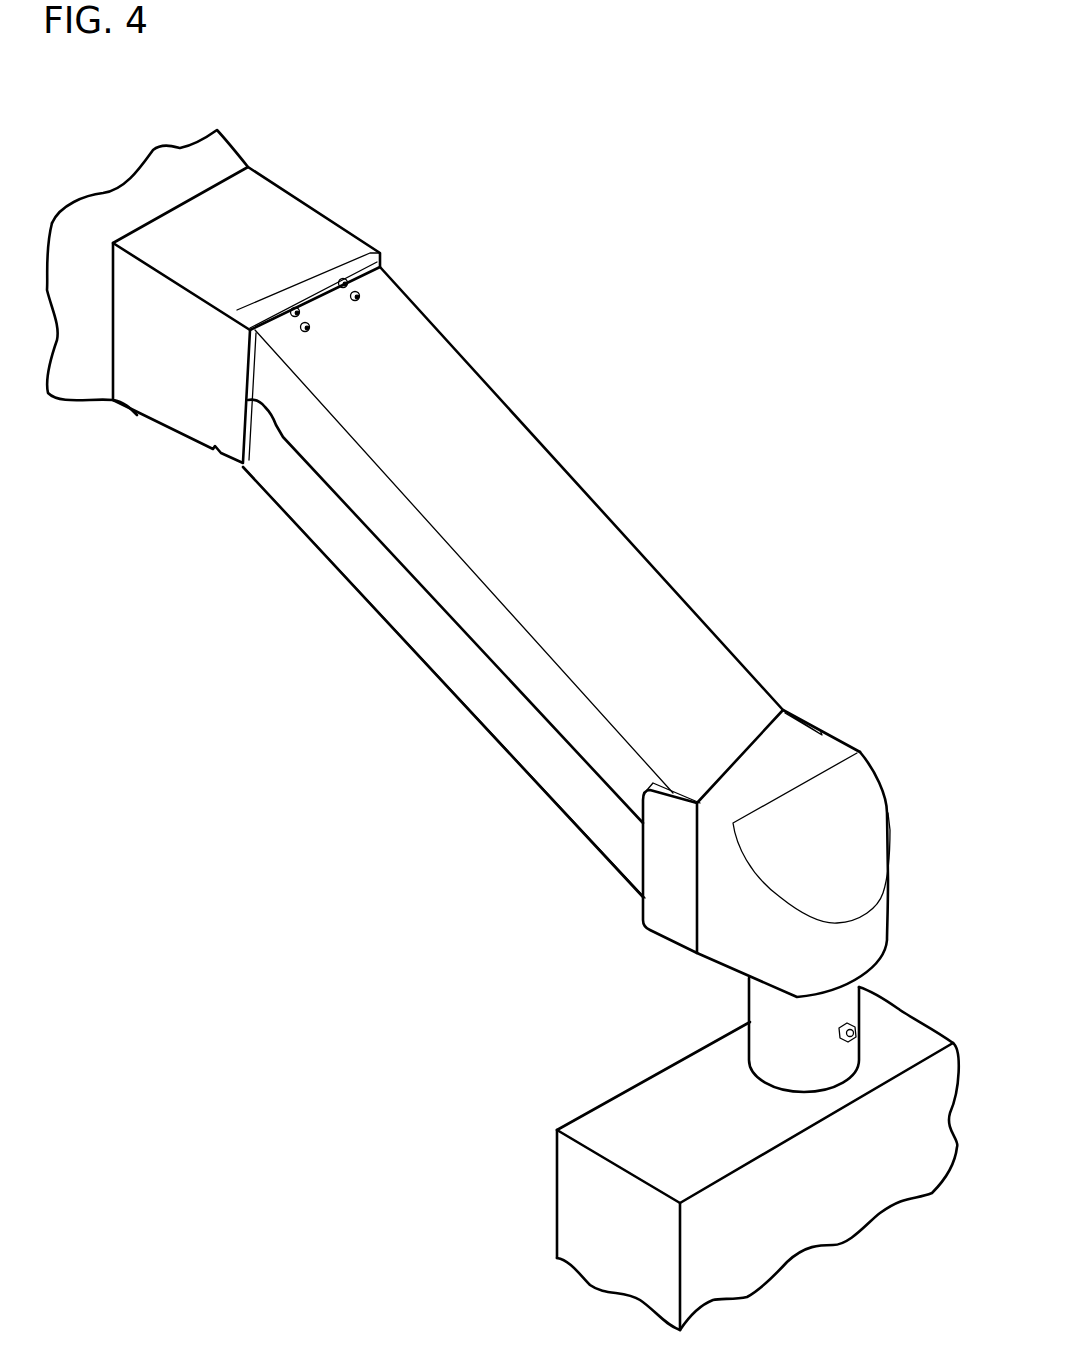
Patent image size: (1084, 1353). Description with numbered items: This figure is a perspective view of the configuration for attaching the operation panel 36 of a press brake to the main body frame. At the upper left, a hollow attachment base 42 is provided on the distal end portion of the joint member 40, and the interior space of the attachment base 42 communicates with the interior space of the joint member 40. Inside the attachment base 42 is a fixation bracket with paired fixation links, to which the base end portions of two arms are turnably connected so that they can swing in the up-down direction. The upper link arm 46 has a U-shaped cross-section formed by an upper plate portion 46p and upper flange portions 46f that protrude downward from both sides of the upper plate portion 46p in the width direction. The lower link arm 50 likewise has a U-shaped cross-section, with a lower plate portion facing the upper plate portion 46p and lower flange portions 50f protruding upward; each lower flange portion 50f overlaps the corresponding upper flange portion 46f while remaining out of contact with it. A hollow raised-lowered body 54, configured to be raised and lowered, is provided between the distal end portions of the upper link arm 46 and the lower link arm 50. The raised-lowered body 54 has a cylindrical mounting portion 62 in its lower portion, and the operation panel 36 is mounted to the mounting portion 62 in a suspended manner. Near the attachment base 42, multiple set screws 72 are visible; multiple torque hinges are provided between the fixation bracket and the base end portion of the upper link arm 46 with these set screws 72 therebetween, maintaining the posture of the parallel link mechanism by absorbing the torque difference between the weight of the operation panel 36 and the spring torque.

The operation panel 36 is at (620, 1113).
The joint member 40 is at (220, 157).
The attachment base 42 is at (290, 208).
The upper link arm 46 is at (558, 503).
The upper plate portion 46p is at (450, 396).
The upper flange portions 46f is at (555, 718).
The lower link arm 50 is at (390, 590).
The lower flange portions 50f is at (468, 680).
The raised-lowered body 54 is at (863, 795).
The mounting portion 62 is at (853, 1014).
The set screws 72 is at (362, 299).